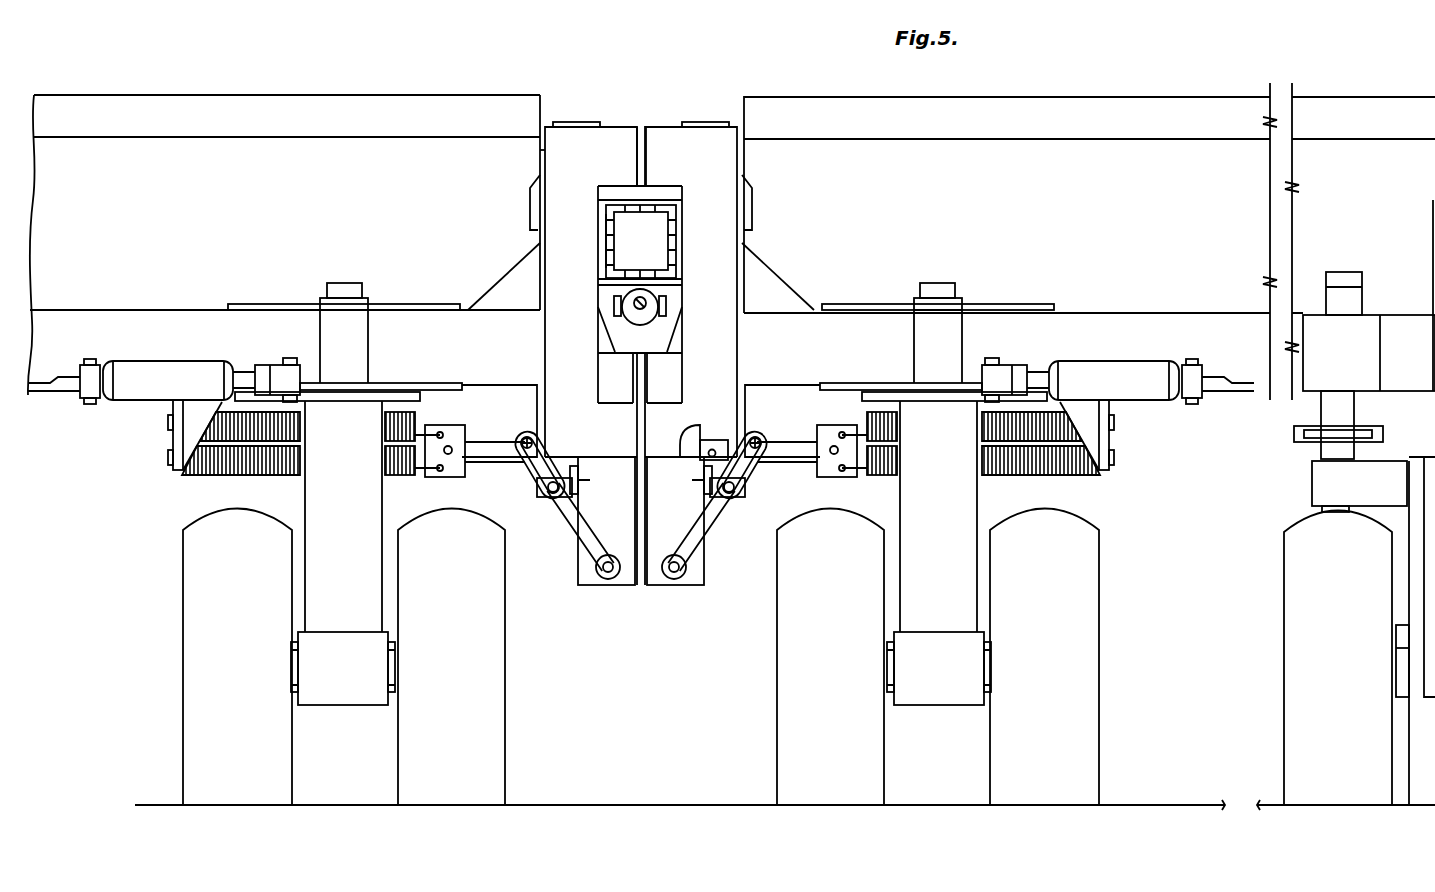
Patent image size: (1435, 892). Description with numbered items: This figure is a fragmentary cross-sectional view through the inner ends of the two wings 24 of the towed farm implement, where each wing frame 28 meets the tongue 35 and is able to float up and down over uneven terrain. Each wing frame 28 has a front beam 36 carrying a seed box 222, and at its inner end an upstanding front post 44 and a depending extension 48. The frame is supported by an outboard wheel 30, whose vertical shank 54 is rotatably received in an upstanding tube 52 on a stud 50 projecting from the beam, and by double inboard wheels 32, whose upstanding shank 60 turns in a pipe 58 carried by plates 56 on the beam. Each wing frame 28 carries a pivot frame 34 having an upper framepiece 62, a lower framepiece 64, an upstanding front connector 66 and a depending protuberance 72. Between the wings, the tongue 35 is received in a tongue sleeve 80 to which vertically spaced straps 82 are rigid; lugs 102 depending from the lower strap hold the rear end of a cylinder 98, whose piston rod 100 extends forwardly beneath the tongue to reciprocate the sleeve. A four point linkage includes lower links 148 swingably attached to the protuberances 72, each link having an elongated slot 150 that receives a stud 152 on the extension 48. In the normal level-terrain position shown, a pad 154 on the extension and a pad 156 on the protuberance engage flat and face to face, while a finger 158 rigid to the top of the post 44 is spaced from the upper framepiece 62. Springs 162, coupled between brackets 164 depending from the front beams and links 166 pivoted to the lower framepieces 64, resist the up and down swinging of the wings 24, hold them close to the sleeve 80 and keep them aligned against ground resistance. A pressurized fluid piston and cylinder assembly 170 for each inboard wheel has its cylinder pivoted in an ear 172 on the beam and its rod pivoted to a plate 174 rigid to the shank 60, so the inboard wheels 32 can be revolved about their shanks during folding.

The wing 24 is at (280, 77).
The wing frame 28 is at (155, 303).
The outboard wheel 30 is at (1284, 745).
The double inboard wheels 32 is at (183, 627).
The pivot frame 34 is at (540, 150).
The tongue 35 is at (680, 238).
The front beam 36 is at (82, 310).
The front post 44 is at (538, 235).
The extension 48 is at (537, 388).
The stud 50 is at (1383, 331).
The upstanding tube 52 is at (1355, 400).
The vertical shank 54 is at (1345, 272).
The plates 56 is at (412, 312).
The pipe 58 is at (322, 335).
The upstanding shank 60 is at (338, 283).
The upper framepiece 62 is at (618, 125).
The lower framepiece 64 is at (620, 400).
The front connector 66 is at (545, 258).
The depending protuberance 72 is at (585, 585).
The tongue sleeve 80 is at (606, 250).
The straps 82 is at (682, 193).
The cylinder 98 is at (660, 318).
The piston rod 100 is at (625, 318).
The lugs 102 is at (668, 296).
The lower link 148 is at (578, 530).
The elongated slot 150 is at (530, 440).
The stud 152 is at (550, 490).
The pad 154 is at (580, 478).
The pad 156 is at (582, 496).
The finger 158 is at (533, 190).
The spring 162 is at (252, 476).
The bracket 164 is at (176, 432).
The link 166 is at (490, 460).
The piston and cylinder assembly 170 is at (150, 362).
The ear 172 is at (68, 392).
The plate 174 is at (372, 401).
The seed box 222 is at (178, 112).